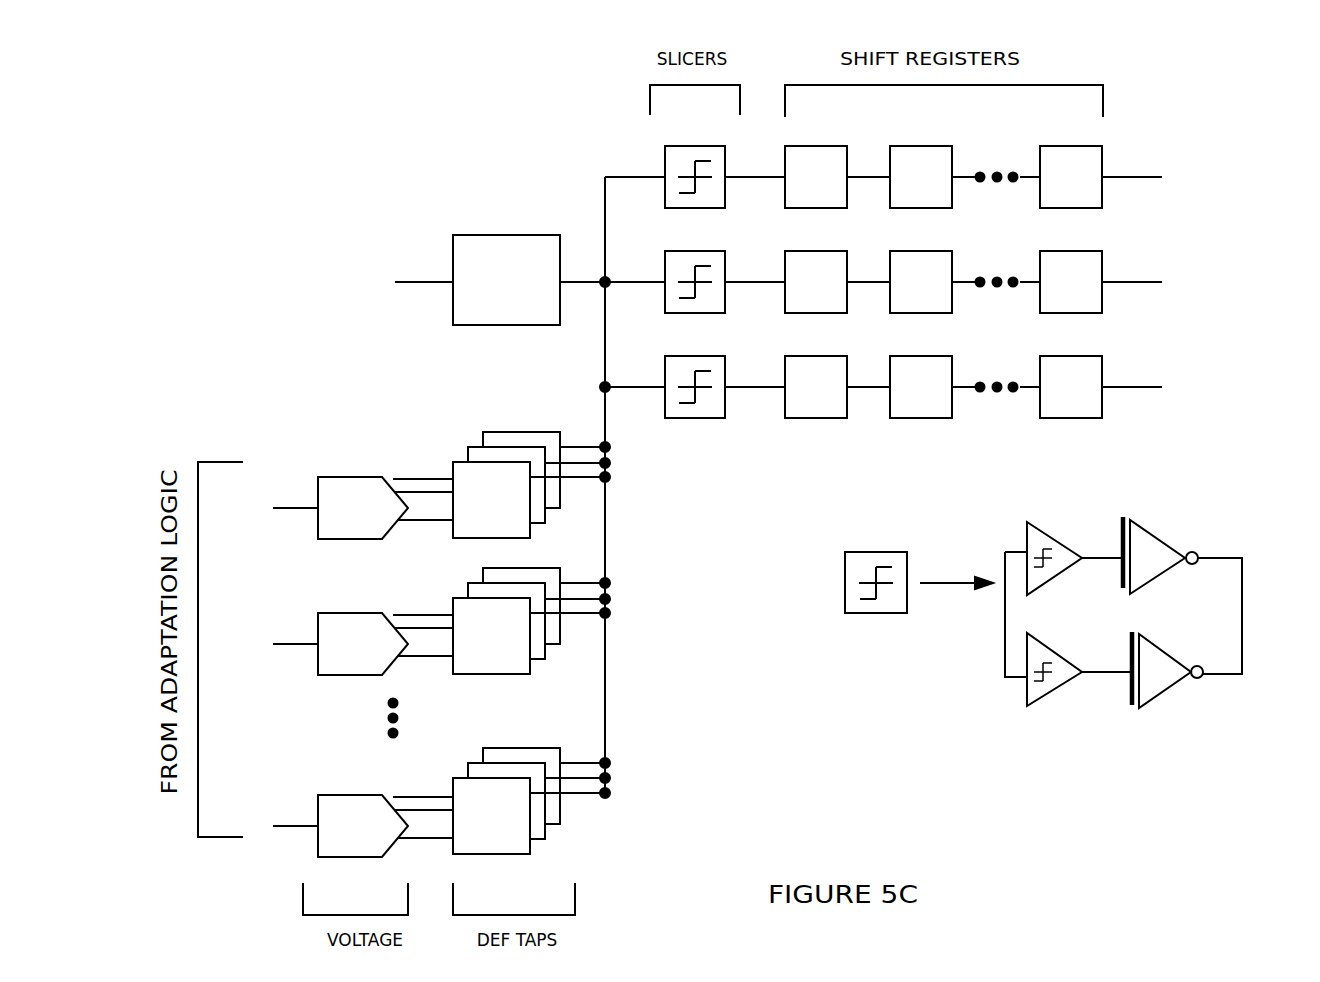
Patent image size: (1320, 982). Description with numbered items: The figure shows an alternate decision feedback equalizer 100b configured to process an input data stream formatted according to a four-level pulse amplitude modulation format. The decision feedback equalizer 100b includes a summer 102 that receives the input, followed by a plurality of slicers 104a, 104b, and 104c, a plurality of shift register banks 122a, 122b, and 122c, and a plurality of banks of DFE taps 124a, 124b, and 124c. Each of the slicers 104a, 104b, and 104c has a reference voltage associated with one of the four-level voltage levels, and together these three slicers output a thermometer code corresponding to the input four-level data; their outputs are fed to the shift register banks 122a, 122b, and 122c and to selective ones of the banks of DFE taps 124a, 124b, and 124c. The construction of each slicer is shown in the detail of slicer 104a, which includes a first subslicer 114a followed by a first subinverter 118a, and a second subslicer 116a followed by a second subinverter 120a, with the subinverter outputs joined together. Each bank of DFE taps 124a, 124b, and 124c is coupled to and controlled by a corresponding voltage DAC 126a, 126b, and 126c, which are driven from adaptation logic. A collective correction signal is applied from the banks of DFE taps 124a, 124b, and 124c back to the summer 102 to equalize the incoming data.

The decision feedback equalizer 100b is at (1120, 108).
The summer 102 is at (505, 233).
The slicer 104a is at (663, 170).
The slicer 104b is at (663, 274).
The slicer 104c is at (670, 374).
The first subslicer 114a is at (1036, 535).
The second subslicer 116a is at (1047, 682).
The first subinverter 118a is at (1128, 535).
The second subinverter 120a is at (1146, 686).
The shift register bank 122a is at (1112, 185).
The shift register bank 122b is at (1112, 283).
The shift register bank 122c is at (1112, 388).
The bank of DFE taps 124a is at (622, 425).
The bank of DFE taps 124b is at (622, 558).
The bank of DFE taps 124c is at (622, 730).
The voltage DAC 126a is at (337, 518).
The voltage DAC 126b is at (337, 654).
The voltage DAC 126c is at (330, 838).